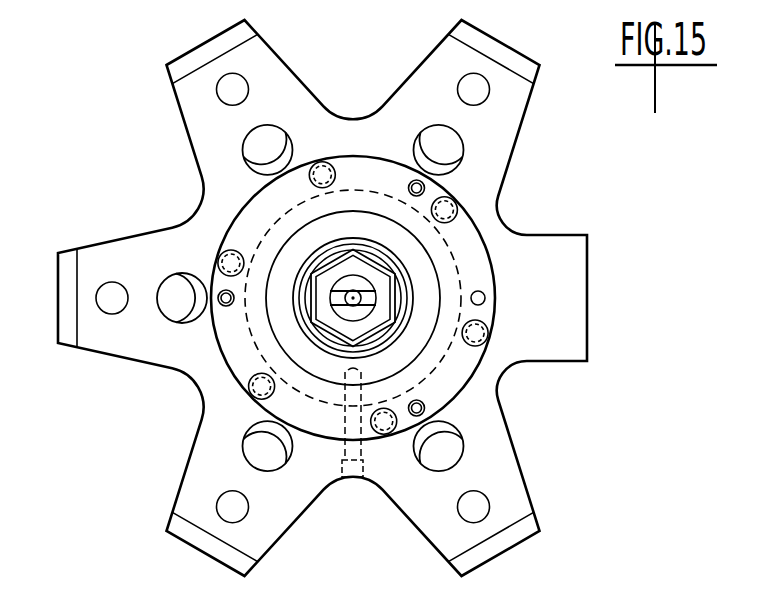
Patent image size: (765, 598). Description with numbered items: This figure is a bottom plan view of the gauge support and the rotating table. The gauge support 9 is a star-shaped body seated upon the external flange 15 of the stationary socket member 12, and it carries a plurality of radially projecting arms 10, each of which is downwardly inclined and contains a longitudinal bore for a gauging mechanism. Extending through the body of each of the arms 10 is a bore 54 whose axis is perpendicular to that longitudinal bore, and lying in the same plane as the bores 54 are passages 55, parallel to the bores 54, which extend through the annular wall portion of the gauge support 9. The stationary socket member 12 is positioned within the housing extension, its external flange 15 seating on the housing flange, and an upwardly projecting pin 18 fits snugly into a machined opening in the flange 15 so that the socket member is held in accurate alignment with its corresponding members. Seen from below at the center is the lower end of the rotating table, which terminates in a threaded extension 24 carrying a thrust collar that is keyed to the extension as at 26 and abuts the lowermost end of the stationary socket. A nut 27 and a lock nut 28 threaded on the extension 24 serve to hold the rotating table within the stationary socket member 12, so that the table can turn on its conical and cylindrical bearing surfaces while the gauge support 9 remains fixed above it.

The gauge support 9 is at (203, 198).
The radially projecting arms 10 is at (204, 124).
The stationary socket member 12 is at (417, 316).
The external flange 15 is at (488, 256).
The pin 18 is at (486, 298).
The threaded extension 24 is at (358, 313).
The key 26 is at (305, 300).
The nut 27 is at (315, 308).
The lock nut 28 is at (325, 318).
The bore 54 is at (468, 88).
The passages 55 is at (437, 135).